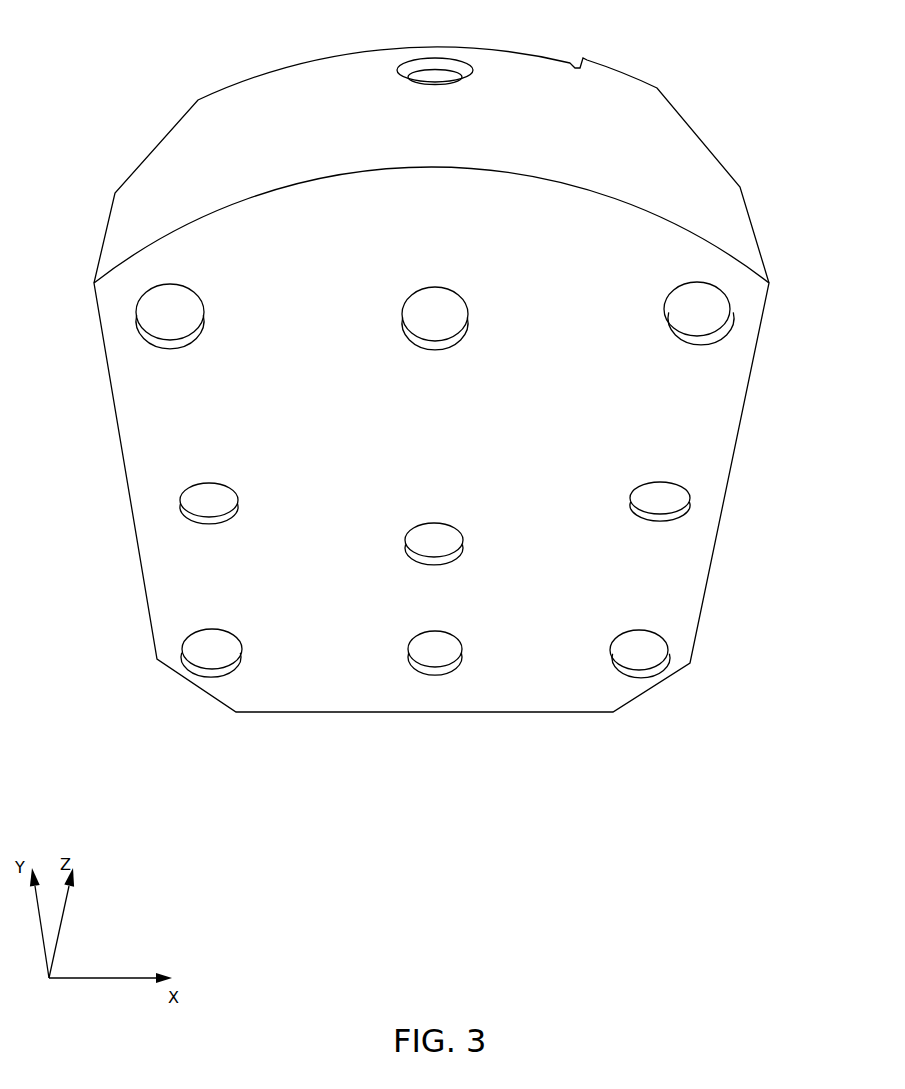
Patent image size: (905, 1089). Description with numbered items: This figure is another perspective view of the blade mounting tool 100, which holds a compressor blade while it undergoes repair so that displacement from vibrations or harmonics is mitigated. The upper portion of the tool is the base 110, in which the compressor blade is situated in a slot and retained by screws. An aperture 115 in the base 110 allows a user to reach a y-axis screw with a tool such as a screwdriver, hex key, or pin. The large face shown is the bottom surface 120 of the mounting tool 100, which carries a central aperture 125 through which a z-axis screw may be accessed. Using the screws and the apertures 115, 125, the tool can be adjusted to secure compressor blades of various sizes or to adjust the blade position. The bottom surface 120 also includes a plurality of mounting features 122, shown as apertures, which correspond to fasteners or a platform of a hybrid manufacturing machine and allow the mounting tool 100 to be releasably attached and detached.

The blade mounting tool 100 is at (108, 92).
The base 110 is at (456, 150).
The aperture 115 is at (418, 62).
The bottom surface 120 is at (429, 439).
The mounting features 122 is at (731, 326).
The aperture 125 is at (433, 522).